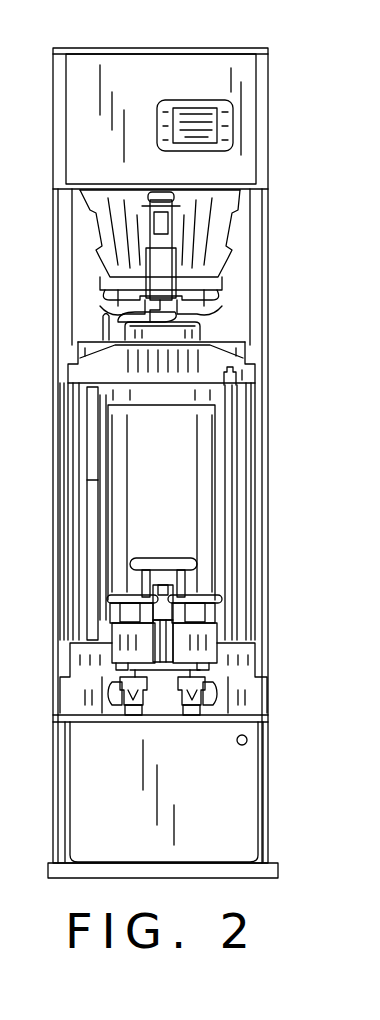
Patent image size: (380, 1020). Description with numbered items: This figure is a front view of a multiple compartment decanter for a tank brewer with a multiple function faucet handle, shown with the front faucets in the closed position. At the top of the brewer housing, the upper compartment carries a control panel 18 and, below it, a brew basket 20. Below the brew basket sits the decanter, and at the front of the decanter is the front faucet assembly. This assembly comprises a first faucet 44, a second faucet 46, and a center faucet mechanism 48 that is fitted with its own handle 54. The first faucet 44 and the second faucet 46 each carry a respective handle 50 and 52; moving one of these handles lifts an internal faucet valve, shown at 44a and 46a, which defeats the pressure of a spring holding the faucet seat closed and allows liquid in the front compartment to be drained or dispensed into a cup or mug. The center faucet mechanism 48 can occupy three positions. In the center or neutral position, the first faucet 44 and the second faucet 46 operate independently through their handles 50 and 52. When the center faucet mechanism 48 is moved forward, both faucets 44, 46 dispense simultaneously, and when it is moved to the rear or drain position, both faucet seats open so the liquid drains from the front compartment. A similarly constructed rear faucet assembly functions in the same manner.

The control panel 18 is at (217, 130).
The brew basket 20 is at (207, 239).
The first faucet 44 is at (122, 568).
The second faucet 46 is at (208, 572).
The center faucet mechanism 48 is at (155, 545).
The handle 50 is at (117, 596).
The handle 52 is at (220, 592).
The handle 54 is at (177, 566).
The internal faucet valve 44a is at (126, 688).
The internal faucet valve 46a is at (206, 722).